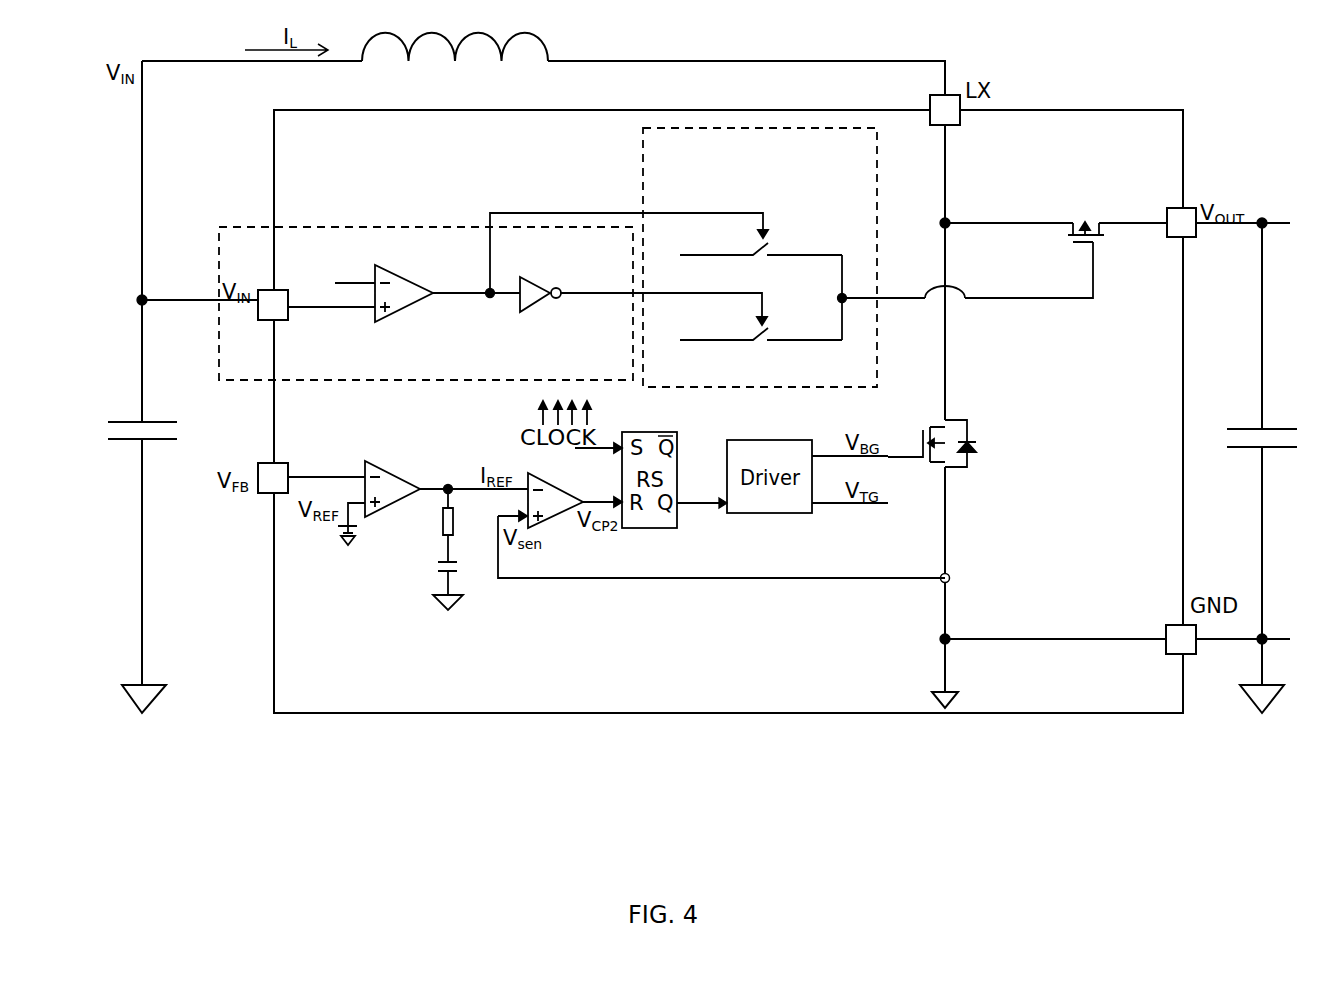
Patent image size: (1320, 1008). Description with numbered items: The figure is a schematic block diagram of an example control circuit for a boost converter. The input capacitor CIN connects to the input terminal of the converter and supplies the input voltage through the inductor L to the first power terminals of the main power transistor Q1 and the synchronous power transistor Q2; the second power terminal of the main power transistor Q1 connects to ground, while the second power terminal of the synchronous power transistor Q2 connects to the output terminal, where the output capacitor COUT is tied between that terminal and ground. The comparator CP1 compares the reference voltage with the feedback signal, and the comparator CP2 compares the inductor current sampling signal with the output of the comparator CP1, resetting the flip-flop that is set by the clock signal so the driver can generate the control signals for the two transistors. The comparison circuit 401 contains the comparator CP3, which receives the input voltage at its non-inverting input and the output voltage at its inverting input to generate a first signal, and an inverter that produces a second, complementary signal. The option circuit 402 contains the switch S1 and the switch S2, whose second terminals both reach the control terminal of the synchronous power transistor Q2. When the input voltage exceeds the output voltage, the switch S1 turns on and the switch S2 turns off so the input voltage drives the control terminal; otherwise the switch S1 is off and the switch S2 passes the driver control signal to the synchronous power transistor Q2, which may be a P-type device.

The comparison circuit 401 is at (493, 296).
The option circuit 402 is at (760, 257).
The inductor L is at (455, 32).
The input capacitor CIN is at (144, 447).
The output capacitor COUT is at (1252, 452).
The main power transistor Q1 is at (934, 460).
The synchronous power transistor Q2 is at (1049, 260).
The comparator CP1 is at (402, 485).
The comparator CP2 is at (559, 496).
The comparator CP3 is at (407, 291).
The switch S1 is at (761, 265).
The switch S2 is at (761, 351).